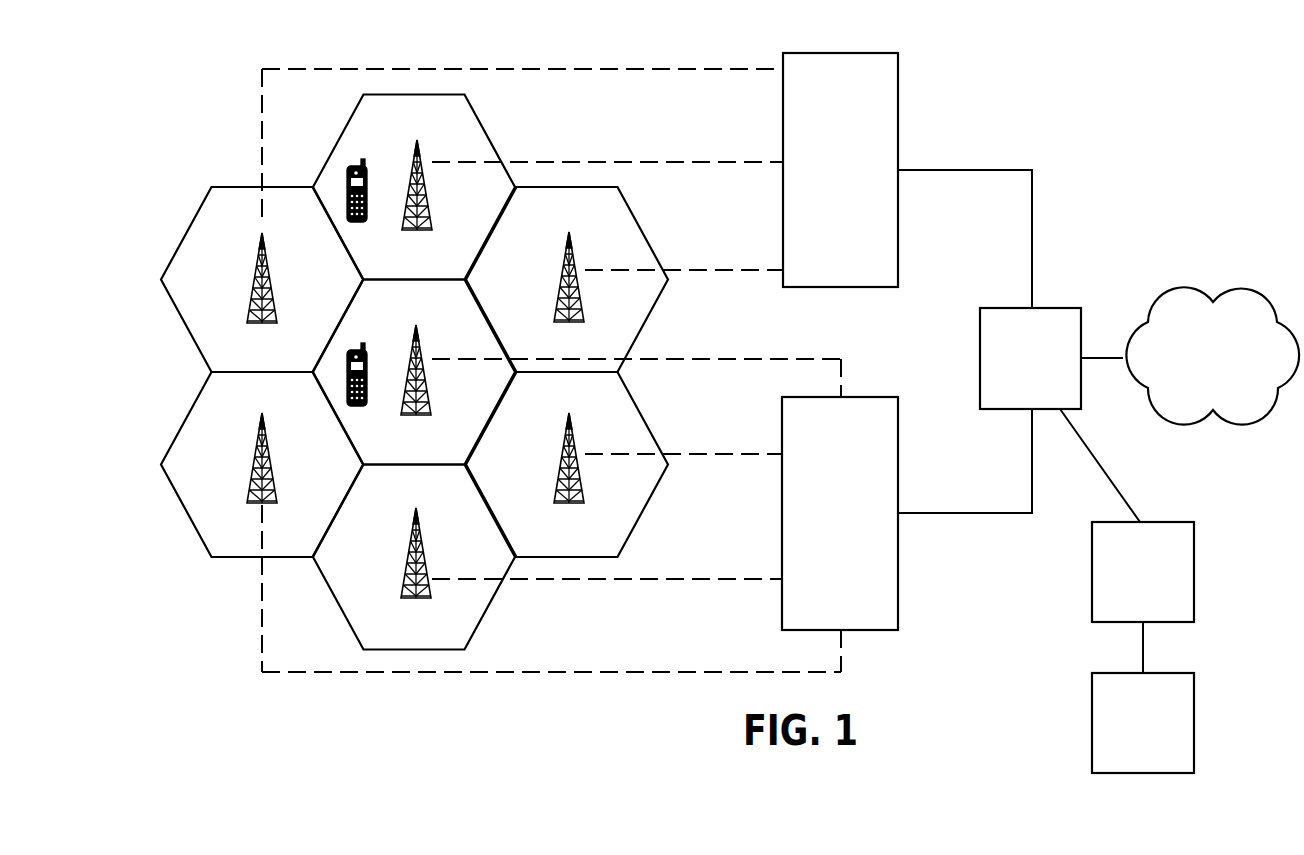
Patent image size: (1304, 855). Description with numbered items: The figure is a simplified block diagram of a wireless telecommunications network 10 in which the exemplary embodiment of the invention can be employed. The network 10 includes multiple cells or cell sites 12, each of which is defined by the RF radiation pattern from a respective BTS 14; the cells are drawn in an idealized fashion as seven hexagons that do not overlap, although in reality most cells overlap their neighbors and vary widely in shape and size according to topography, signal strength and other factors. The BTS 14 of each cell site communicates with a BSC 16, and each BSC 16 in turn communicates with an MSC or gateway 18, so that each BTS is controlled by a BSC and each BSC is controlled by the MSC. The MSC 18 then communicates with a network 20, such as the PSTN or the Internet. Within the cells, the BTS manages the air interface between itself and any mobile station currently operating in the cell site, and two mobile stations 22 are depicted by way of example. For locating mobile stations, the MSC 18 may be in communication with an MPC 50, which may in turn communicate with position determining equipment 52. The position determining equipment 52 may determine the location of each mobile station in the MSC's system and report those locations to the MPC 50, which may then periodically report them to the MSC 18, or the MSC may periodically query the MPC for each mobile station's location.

The wireless telecommunications network 10 is at (256, 714).
The cell site 12 is at (191, 226).
The BTS 14 is at (250, 292).
The BSC 16 is at (840, 53).
The MSC 18 is at (980, 357).
The network 20 is at (1237, 288).
The mobile station 22 is at (355, 222).
The MPC 50 is at (1194, 570).
The position determining equipment 52 is at (1194, 722).